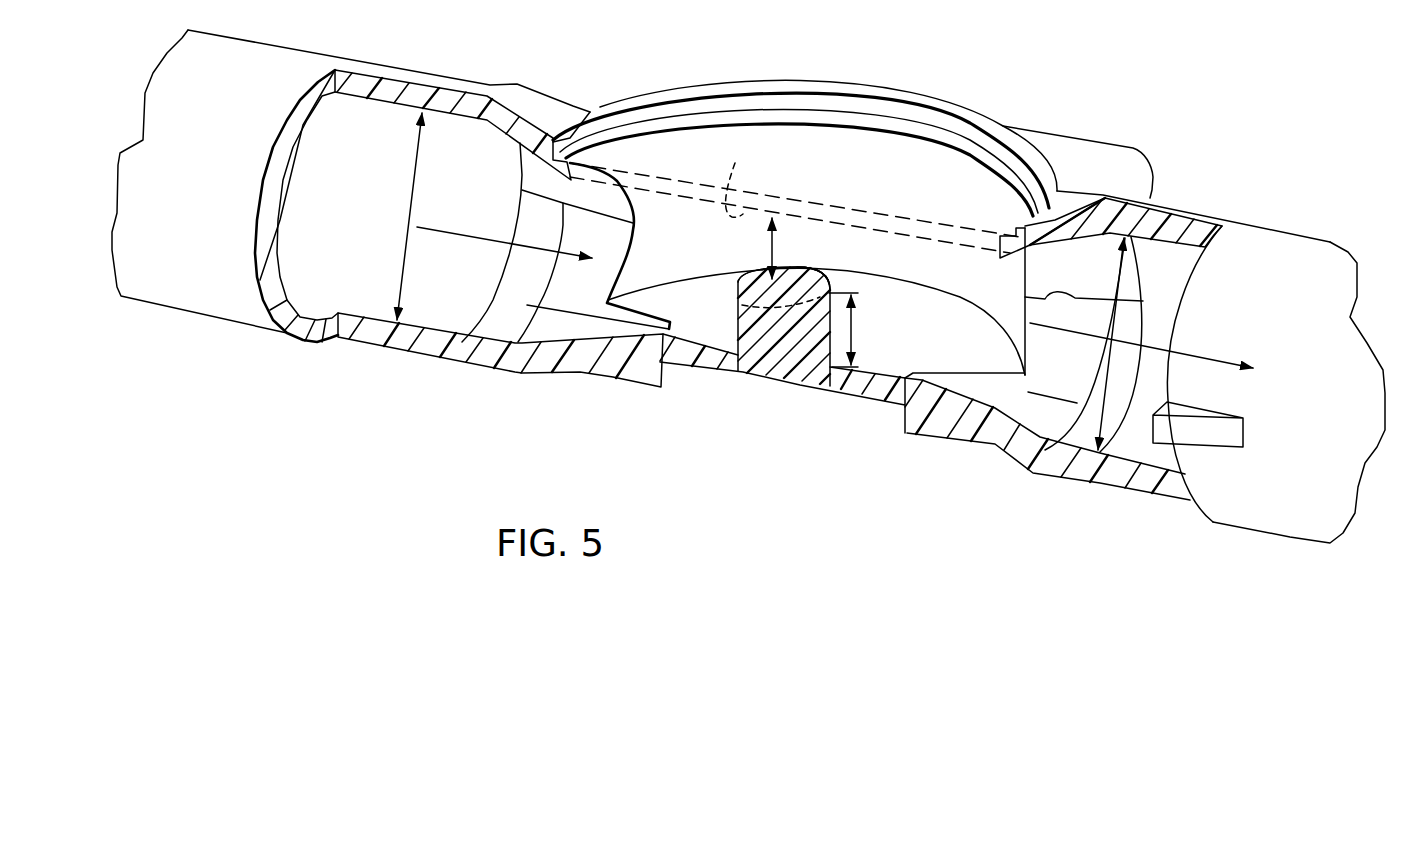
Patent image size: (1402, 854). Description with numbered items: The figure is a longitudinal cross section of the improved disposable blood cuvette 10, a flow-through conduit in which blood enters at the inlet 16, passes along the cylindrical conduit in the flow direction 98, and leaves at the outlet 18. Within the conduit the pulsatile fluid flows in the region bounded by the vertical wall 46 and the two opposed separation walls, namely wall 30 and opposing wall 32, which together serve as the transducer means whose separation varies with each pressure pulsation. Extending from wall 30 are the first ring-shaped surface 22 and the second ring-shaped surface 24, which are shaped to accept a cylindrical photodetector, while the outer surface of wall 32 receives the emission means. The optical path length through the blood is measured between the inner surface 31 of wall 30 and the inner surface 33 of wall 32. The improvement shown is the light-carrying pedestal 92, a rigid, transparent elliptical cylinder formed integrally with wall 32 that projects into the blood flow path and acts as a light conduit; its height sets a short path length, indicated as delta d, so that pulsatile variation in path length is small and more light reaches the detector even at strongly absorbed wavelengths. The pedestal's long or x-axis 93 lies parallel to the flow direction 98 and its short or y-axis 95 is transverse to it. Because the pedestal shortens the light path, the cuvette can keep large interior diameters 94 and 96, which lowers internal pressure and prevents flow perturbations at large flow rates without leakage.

The cuvette 10 is at (938, 88).
The inlet 16 is at (473, 93).
The outlet 18 is at (1187, 217).
The first ring-shaped surface 22 is at (1021, 231).
The second ring-shaped surface 24 is at (1000, 123).
The wall 30 is at (667, 183).
The inner surface of separation wall 30 31 is at (746, 183).
The opposing wall 32 is at (877, 392).
The inner surface of separation wall 32 33 is at (895, 355).
The vertical wall 46 is at (1022, 287).
The light-carrying pedestal 92 is at (772, 333).
The long or x-axis of the ellipse 93 is at (815, 273).
The diameter 94 is at (418, 170).
The short or y-axis of the ellipse 95 is at (793, 274).
The diameter 96 is at (1116, 273).
The flow direction 98 is at (483, 249).